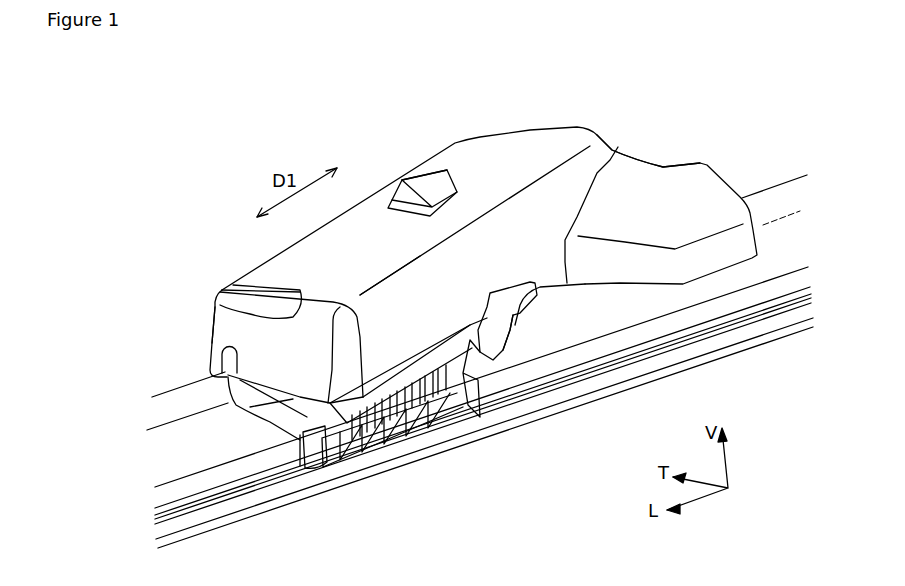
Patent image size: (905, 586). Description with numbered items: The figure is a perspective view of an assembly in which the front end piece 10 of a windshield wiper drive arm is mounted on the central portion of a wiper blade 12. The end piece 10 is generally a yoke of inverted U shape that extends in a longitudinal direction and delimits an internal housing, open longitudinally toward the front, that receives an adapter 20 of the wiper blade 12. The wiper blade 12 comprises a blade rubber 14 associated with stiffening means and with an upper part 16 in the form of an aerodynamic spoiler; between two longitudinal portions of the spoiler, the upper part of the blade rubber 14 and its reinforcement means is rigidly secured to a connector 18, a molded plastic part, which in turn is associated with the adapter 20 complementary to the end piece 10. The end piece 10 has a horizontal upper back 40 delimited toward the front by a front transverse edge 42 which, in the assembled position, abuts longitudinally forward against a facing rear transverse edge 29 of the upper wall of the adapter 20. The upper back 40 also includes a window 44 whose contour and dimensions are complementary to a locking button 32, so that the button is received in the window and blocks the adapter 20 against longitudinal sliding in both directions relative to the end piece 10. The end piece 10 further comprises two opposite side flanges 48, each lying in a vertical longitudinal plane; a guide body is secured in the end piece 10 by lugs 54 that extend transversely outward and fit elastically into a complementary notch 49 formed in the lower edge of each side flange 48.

The front end piece 10 is at (470, 132).
The wiper blade 12 is at (362, 479).
The blade rubber 14 is at (497, 432).
The upper part 16 is at (183, 403).
The connector 18 is at (297, 450).
The adapter 20 is at (268, 332).
The rear transverse edge 29 is at (283, 283).
The locking button 32 is at (405, 193).
The horizontal upper back 40 is at (367, 240).
The front transverse edge 42 is at (222, 300).
The window 44 is at (430, 187).
The side flanges 48 is at (507, 243).
The notch 49 is at (530, 320).
The lugs 54 is at (517, 330).